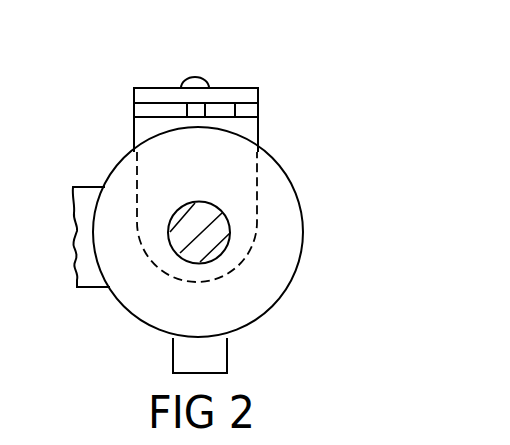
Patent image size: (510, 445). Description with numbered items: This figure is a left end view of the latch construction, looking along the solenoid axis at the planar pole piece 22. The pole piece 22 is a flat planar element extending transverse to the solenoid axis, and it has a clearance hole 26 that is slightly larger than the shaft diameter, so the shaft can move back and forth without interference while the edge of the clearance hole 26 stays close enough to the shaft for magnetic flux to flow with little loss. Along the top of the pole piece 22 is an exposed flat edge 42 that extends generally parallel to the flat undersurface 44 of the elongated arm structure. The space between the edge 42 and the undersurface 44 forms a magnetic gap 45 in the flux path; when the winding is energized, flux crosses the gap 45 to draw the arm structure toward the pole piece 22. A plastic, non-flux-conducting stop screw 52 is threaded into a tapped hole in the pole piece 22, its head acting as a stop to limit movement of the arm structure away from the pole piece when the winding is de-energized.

The pole piece 22 is at (246, 137).
The clearance hole 26 is at (221, 258).
The exposed flat edge 42 is at (232, 115).
The flat undersurface 44 is at (215, 105).
The magnetic gap 45 is at (158, 112).
The stop screw 52 is at (197, 113).